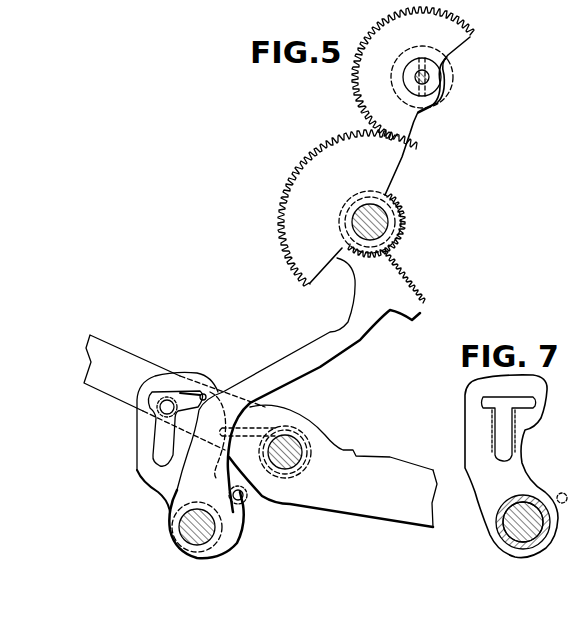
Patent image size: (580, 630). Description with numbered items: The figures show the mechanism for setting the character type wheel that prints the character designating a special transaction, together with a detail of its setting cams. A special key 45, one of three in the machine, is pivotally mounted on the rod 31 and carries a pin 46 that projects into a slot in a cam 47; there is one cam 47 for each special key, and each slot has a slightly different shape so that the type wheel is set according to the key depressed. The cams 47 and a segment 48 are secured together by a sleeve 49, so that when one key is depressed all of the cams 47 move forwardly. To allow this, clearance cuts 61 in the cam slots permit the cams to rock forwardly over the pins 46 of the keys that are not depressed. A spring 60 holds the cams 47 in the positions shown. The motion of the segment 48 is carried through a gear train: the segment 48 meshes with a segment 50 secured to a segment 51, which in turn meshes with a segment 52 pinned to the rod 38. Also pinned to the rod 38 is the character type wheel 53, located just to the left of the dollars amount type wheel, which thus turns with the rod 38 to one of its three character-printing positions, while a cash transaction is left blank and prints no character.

In FIG. 5, the rod 31 is at (303, 457).
In FIG. 5, the rod 38 is at (415, 77).
In FIG. 5, the special key 45 is at (160, 350).
In FIG. 5, the pin 46 is at (165, 404).
In FIG. 5, the cam 47 is at (137, 447).
In FIG. 7, the cam 47 is at (538, 425).
In FIG. 5, the segment 48 is at (316, 369).
In FIG. 5, the sleeve 49 is at (203, 503).
In FIG. 7, the sleeve 49 is at (520, 505).
In FIG. 5, the segment 50 is at (402, 223).
In FIG. 5, the segment 51 is at (409, 148).
In FIG. 5, the segment 52 is at (408, 126).
In FIG. 5, the character type wheel 53 is at (448, 60).
In FIG. 5, the spring 60 is at (270, 487).
In FIG. 5, the clearance cut 61 is at (205, 395).